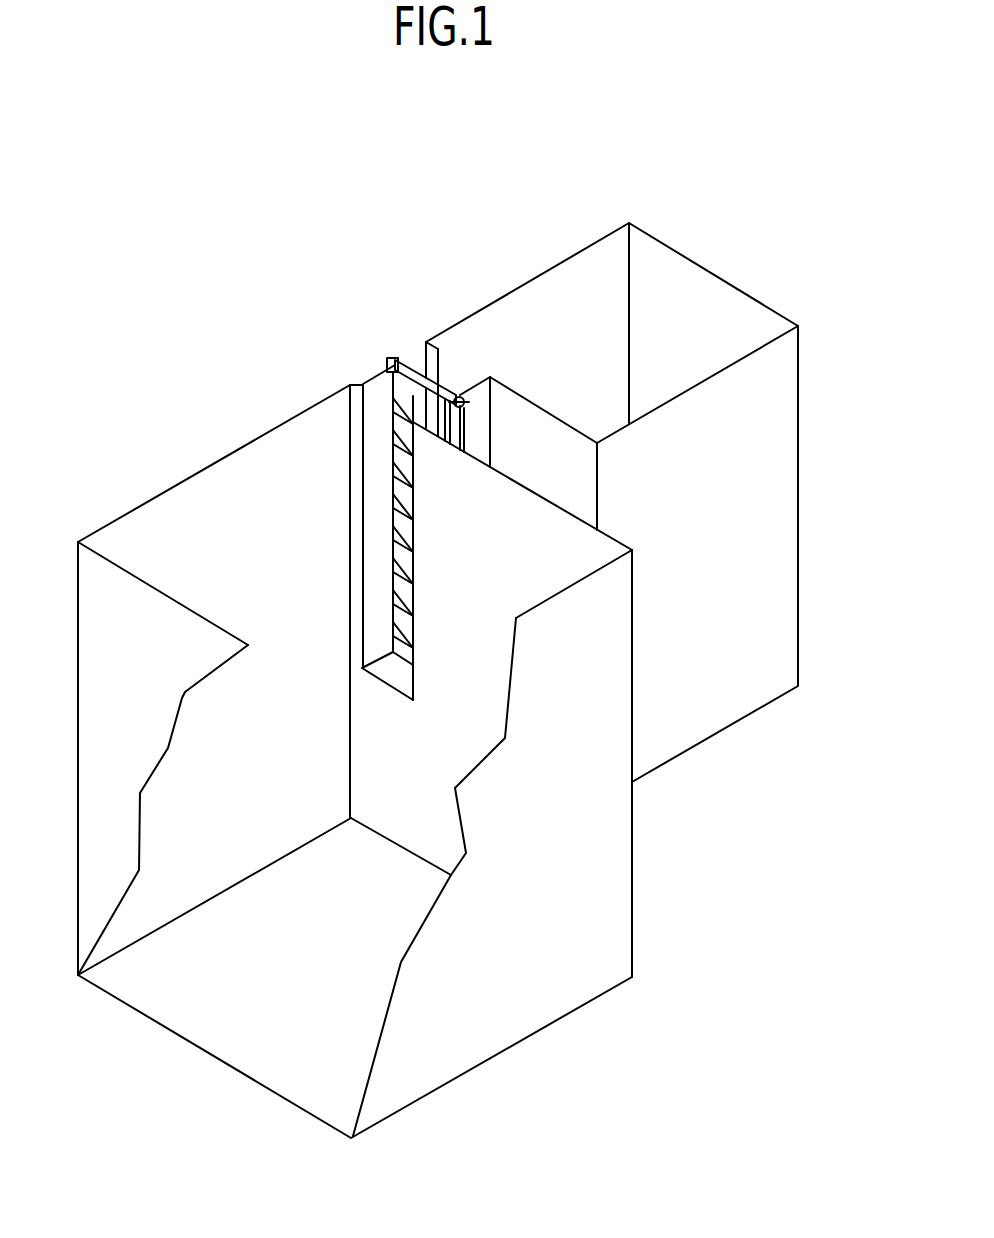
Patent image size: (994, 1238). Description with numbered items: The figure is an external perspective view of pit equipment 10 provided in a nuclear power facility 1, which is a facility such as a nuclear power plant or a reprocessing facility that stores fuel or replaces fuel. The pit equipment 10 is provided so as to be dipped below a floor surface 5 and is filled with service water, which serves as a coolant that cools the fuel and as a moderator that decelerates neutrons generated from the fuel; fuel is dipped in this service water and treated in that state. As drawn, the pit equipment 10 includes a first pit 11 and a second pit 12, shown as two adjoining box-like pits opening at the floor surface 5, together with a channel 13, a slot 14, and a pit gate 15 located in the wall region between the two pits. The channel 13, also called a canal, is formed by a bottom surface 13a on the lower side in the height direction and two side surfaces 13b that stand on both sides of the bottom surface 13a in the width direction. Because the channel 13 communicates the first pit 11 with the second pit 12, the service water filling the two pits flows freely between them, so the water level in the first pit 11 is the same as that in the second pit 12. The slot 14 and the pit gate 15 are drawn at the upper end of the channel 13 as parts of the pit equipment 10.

The nuclear power facility 1 is at (352, 216).
The floor surface 5 is at (138, 325).
The pit equipment 10 is at (545, 273).
The first pit 11 is at (132, 509).
The second pit 12 is at (744, 291).
The channel 13 is at (372, 385).
The bottom surface 13a is at (396, 672).
The side surface 13b is at (350, 572).
The slot 14 is at (388, 355).
The pit gate 15 is at (447, 392).